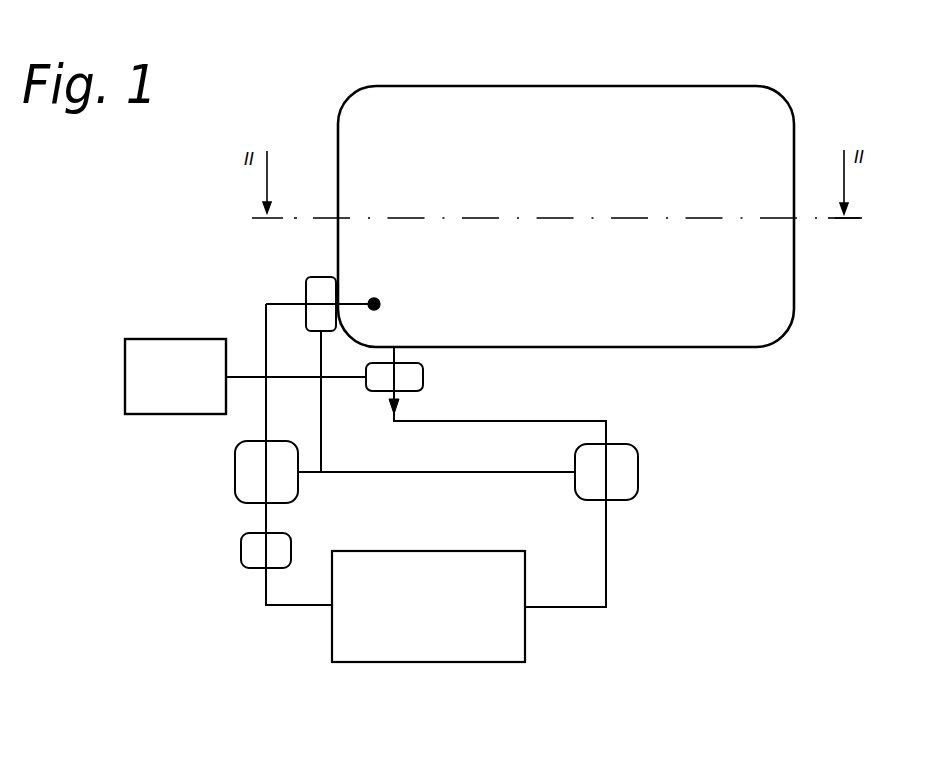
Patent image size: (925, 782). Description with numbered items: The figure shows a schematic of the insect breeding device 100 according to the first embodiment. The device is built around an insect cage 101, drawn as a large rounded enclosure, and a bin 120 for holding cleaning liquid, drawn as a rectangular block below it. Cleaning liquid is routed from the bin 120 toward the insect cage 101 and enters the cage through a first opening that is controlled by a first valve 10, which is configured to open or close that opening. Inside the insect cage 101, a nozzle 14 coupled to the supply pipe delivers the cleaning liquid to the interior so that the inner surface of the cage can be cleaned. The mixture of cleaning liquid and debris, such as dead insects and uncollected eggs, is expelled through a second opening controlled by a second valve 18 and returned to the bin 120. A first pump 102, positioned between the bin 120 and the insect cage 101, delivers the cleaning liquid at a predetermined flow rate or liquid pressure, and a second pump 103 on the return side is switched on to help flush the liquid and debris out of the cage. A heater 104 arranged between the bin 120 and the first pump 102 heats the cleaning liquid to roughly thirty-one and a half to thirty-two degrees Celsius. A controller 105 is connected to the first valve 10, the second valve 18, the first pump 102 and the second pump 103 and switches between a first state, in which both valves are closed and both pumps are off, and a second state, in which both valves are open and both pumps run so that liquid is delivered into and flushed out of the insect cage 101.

The insect breeding device 100 is at (749, 612).
The insect cage 101 is at (682, 108).
The first valve 10 is at (318, 293).
The nozzle 14 is at (378, 298).
The second valve 18 is at (413, 373).
The first pump 102 is at (248, 482).
The second pump 103 is at (625, 479).
The heater 104 is at (253, 558).
The controller 105 is at (154, 351).
The bin 120 is at (432, 644).